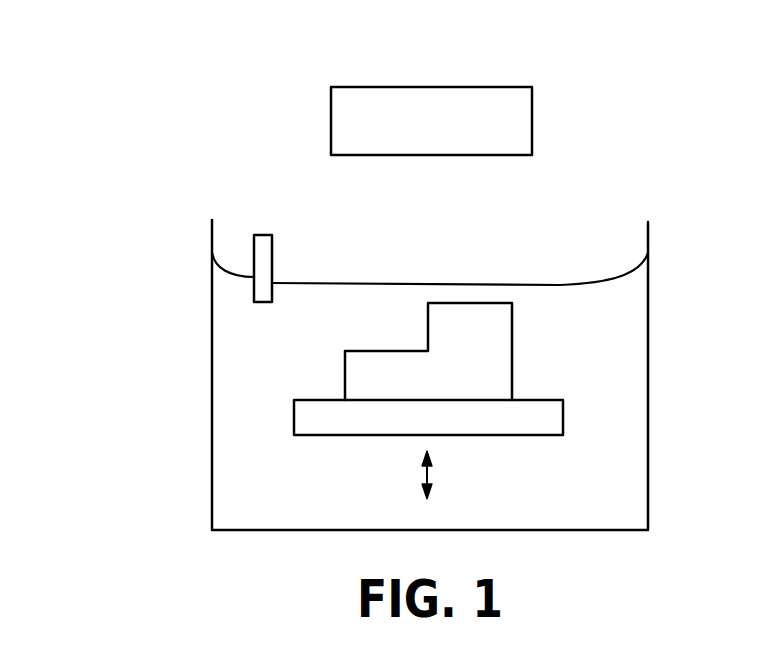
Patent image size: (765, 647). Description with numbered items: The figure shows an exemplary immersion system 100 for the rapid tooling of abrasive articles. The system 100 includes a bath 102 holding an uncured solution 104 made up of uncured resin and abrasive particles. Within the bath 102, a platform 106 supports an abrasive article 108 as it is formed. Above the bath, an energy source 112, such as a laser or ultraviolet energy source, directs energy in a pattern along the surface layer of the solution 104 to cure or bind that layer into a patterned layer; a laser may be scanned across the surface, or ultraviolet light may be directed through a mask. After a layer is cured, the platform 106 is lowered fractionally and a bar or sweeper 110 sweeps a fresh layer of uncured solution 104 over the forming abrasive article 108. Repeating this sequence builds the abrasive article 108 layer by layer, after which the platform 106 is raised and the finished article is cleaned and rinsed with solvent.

The system 100 is at (139, 69).
The bath 102 is at (212, 298).
The uncured solution 104 is at (227, 480).
The platform 106 is at (294, 415).
The abrasive article 108 is at (345, 368).
The sweeper 110 is at (262, 235).
The energy source 112 is at (331, 117).